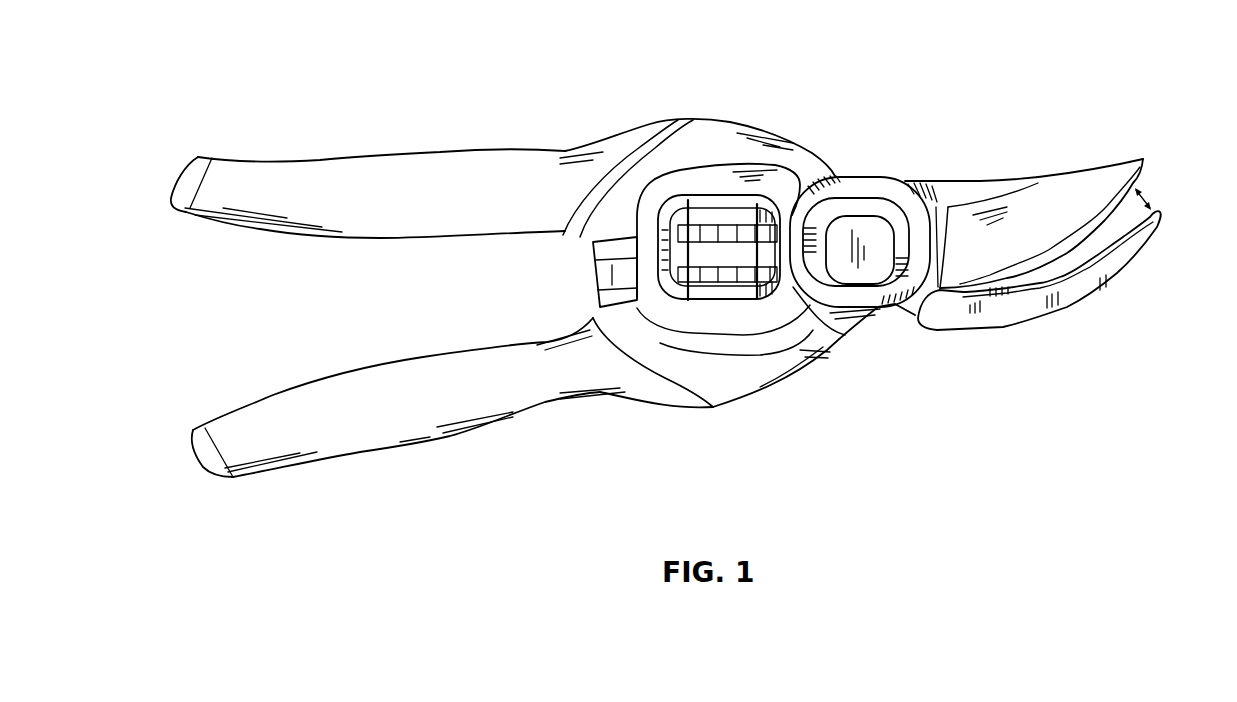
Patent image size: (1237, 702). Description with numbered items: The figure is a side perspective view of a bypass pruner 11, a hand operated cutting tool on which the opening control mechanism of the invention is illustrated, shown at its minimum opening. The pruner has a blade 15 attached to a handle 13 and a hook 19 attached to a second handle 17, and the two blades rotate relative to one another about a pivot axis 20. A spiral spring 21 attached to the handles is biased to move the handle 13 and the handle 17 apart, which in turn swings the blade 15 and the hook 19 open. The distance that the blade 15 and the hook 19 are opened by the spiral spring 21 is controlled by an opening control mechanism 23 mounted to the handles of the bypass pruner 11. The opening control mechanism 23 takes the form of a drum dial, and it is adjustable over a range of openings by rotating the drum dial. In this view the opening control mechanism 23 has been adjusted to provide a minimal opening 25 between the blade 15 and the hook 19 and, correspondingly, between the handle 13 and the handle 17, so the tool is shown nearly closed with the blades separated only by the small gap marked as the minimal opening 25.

The bypass pruner 11 is at (762, 128).
The handle 13 is at (547, 413).
The blade 15 is at (965, 180).
The handle 17 is at (347, 155).
The hook 19 is at (1052, 310).
The pivot axis 20 is at (868, 215).
The spiral spring 21 is at (588, 274).
The opening control mechanism 23 is at (765, 282).
The minimal opening 25 is at (1140, 192).